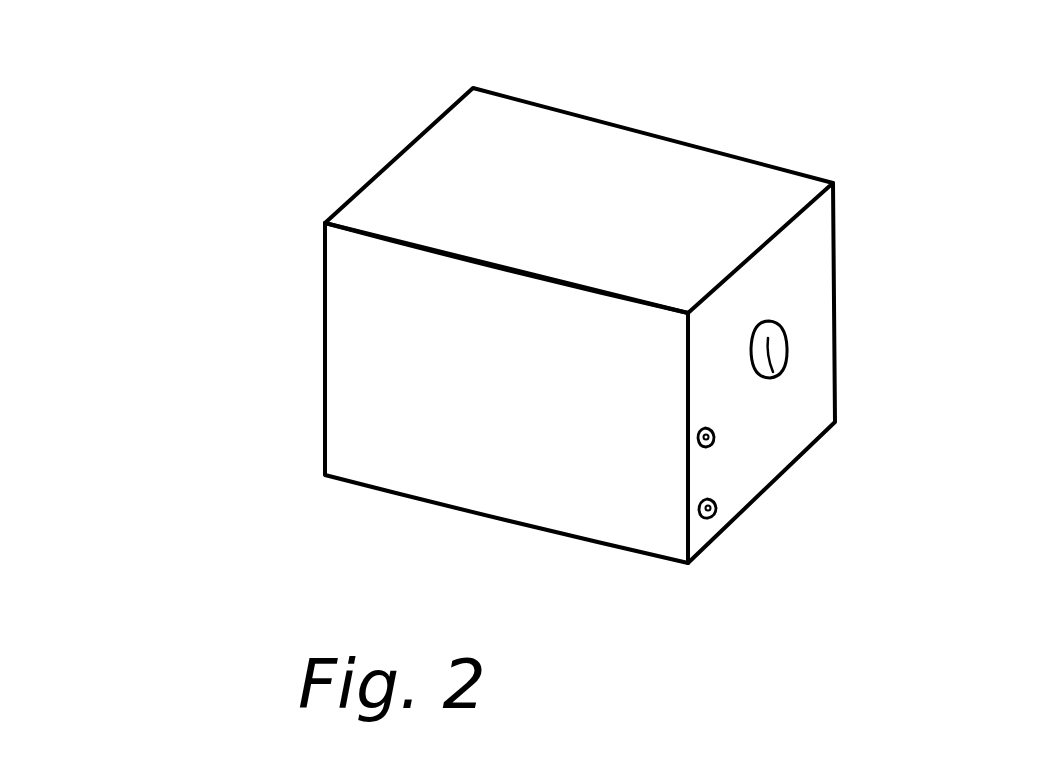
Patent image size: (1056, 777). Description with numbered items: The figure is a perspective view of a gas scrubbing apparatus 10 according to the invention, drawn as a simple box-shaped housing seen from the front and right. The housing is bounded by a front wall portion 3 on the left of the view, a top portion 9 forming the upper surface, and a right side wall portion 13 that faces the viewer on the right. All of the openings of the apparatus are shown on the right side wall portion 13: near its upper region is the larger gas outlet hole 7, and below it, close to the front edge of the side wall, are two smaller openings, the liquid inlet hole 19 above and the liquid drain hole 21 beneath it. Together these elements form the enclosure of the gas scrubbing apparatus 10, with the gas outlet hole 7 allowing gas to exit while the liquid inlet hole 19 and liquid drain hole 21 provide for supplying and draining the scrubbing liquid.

The front wall portion 3 is at (372, 377).
The top portion 9 is at (717, 180).
The right side wall portion 13 is at (793, 387).
The gas outlet hole 7 is at (783, 327).
The liquid inlet hole 19 is at (715, 431).
The liquid drain hole 21 is at (720, 515).
The gas scrubbing apparatus 10 is at (305, 102).